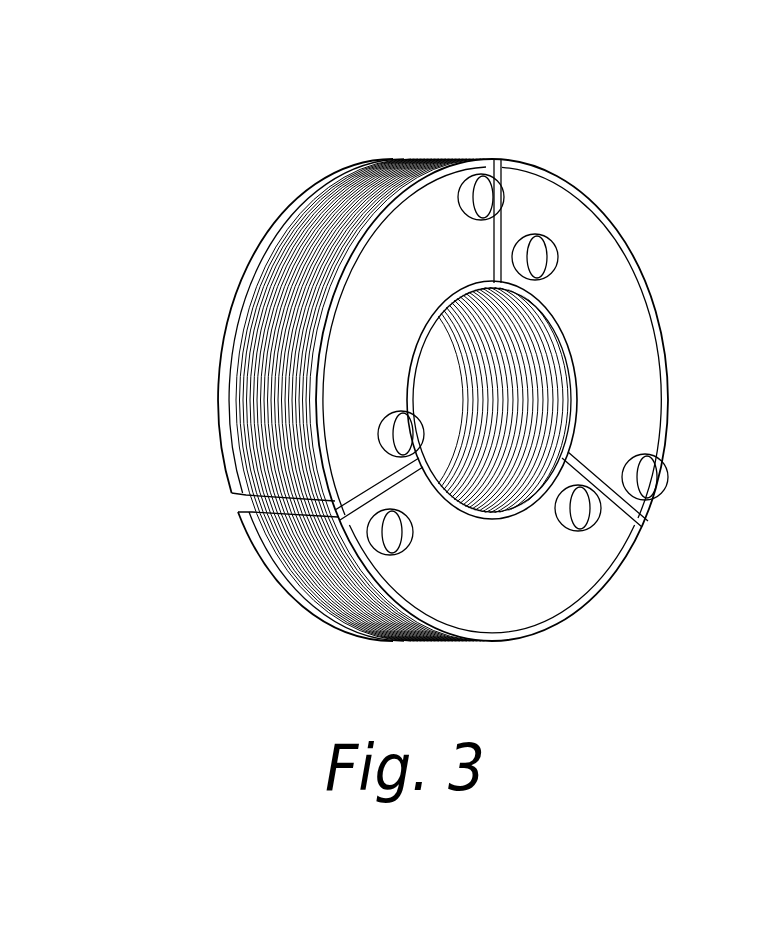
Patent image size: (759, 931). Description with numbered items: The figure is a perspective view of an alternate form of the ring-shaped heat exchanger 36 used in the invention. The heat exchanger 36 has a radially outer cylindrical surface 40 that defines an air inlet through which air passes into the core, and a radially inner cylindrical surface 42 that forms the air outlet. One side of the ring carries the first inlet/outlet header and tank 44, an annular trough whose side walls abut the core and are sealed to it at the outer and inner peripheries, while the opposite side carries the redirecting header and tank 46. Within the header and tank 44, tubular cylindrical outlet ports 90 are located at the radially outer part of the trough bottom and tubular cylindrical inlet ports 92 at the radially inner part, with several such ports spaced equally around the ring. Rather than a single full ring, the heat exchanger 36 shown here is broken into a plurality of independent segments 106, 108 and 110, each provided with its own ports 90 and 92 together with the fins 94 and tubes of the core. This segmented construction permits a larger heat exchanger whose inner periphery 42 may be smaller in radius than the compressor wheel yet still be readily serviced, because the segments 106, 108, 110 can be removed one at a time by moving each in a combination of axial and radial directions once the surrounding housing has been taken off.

The heat exchanger 36 is at (201, 498).
The radially outer cylindrical surface 40 is at (244, 335).
The radially inner cylindrical surface 42 is at (540, 388).
The first inlet/outlet header and tank 44 is at (383, 256).
The redirecting header and tank 46 is at (287, 185).
The outlet port 90 is at (541, 237).
The inlet port 92 is at (466, 208).
The fins 94 is at (246, 405).
The segment 106 is at (259, 270).
The segment 108 is at (597, 236).
The segment 110 is at (552, 592).